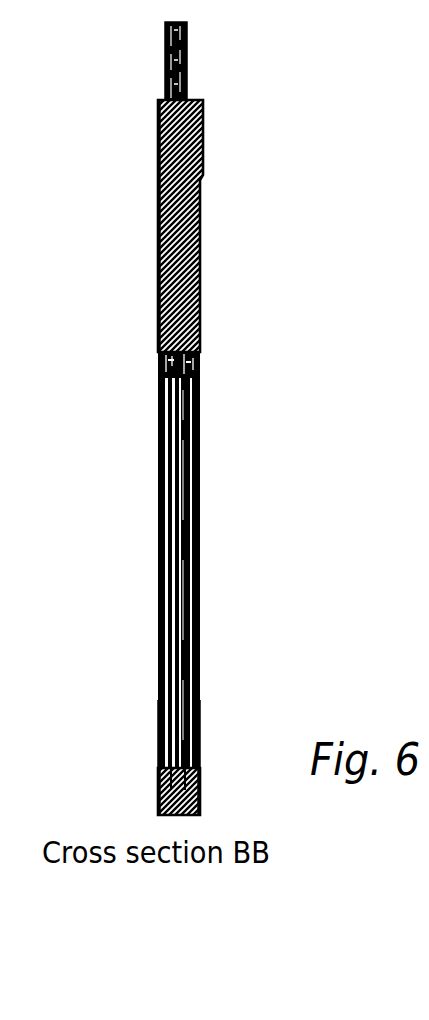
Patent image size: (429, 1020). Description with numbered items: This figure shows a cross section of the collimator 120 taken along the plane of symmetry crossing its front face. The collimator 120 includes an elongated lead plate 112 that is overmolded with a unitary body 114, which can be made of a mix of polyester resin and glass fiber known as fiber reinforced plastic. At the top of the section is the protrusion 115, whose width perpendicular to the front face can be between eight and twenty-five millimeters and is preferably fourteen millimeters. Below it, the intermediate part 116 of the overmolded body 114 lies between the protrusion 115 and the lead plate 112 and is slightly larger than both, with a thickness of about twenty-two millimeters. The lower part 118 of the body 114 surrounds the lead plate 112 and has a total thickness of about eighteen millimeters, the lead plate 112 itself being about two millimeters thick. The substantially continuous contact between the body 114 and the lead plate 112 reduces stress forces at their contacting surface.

The lead plate 112 is at (185, 422).
The unitary body 114 is at (212, 202).
The protrusion 115 is at (192, 48).
The intermediate part 116 is at (185, 152).
The lower part 118 is at (193, 700).
The collimator 120 is at (148, 369).